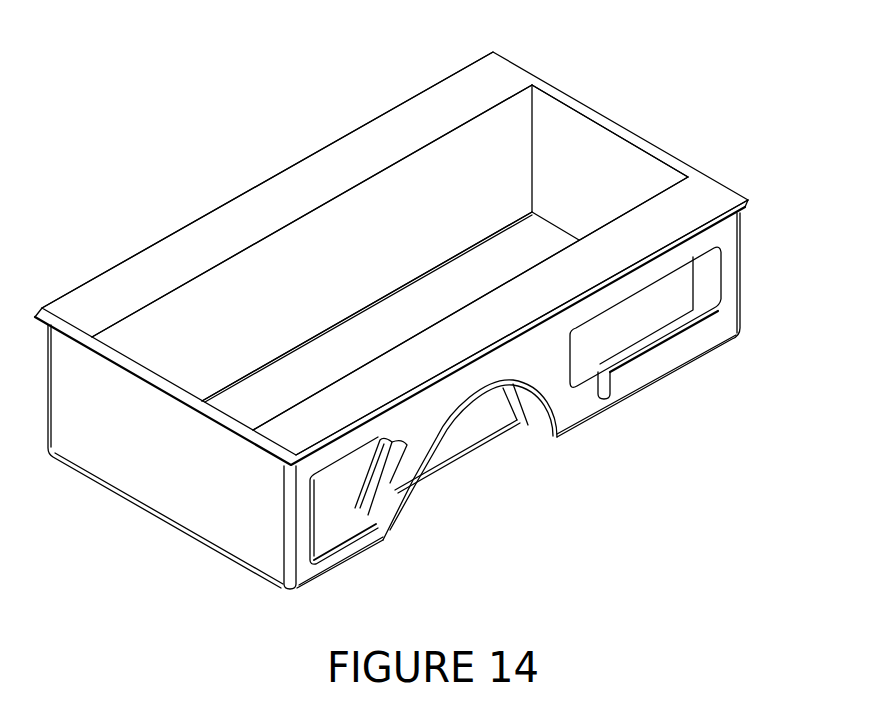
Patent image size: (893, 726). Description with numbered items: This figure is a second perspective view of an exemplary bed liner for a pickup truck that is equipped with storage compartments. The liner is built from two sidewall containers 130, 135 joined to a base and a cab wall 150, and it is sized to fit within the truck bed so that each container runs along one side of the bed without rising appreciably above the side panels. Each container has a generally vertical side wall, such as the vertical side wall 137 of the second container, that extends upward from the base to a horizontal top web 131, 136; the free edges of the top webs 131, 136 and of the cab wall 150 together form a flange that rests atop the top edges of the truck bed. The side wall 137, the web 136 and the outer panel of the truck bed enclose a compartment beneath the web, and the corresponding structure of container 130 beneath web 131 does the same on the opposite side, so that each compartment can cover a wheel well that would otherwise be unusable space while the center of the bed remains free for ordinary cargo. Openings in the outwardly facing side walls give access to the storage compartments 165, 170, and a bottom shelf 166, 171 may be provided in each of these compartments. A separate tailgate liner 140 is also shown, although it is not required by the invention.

The sidewall container 130 is at (697, 208).
The top web 131 is at (500, 316).
The sidewall container 135 is at (265, 205).
The top web 136 is at (267, 180).
The vertical side wall 137 is at (367, 306).
The tailgate liner 140 is at (168, 466).
The cab wall 150 is at (625, 165).
The storage compartment 165 is at (323, 500).
The bottom shelf 166 is at (387, 517).
The storage compartment 170 is at (647, 300).
The bottom shelf 171 is at (602, 390).